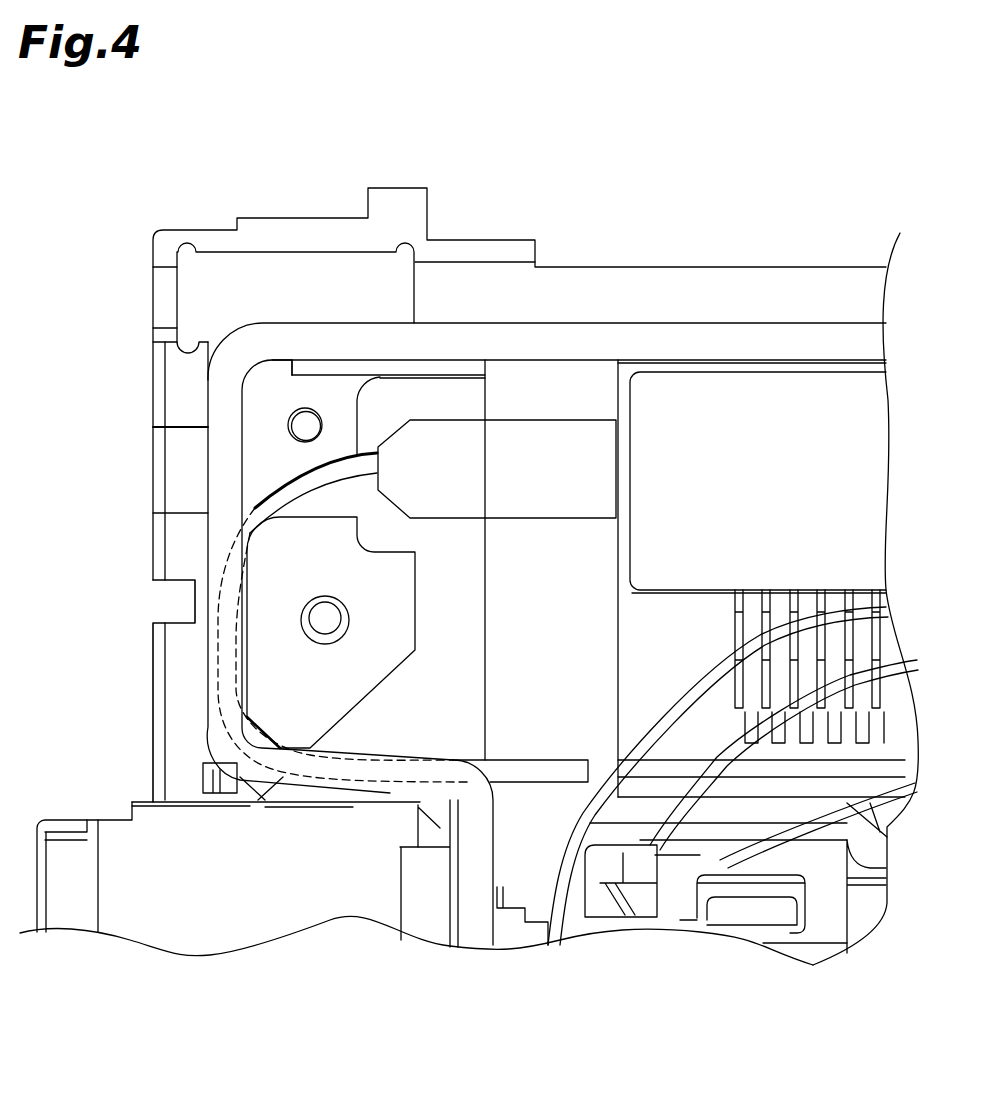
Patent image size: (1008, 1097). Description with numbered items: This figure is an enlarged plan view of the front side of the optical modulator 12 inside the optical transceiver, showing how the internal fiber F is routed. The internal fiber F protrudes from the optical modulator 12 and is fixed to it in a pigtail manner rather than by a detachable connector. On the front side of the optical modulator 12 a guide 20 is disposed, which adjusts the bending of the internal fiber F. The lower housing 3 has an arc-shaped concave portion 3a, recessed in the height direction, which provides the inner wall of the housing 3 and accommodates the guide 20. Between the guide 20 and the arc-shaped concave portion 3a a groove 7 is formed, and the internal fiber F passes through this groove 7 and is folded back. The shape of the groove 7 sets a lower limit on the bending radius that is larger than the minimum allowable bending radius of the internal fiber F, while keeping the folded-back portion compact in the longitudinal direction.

The housing 3 is at (590, 262).
The arc-shaped concave portion 3a is at (262, 527).
The groove 7 is at (208, 598).
The optical modulator 12 is at (762, 385).
The guide 20 is at (308, 508).
The internal fiber F is at (335, 470).